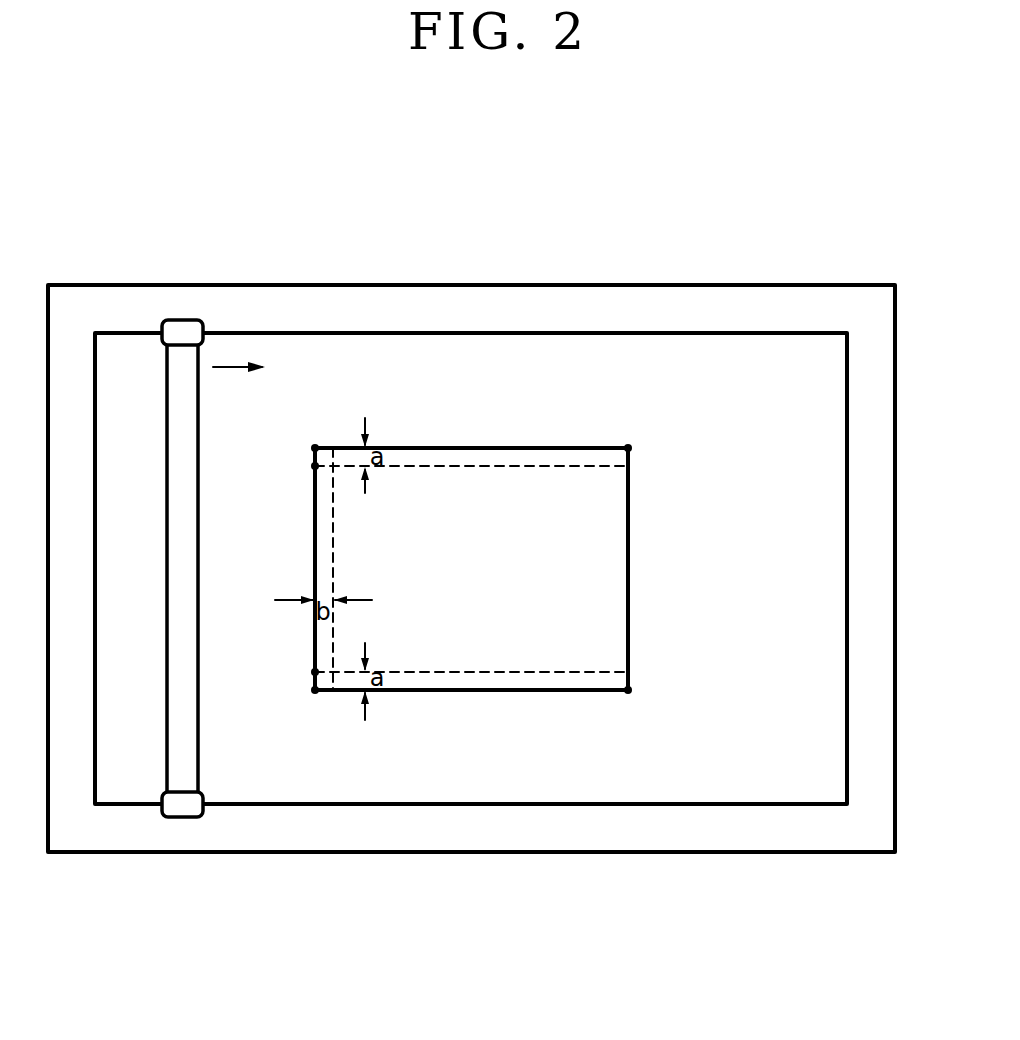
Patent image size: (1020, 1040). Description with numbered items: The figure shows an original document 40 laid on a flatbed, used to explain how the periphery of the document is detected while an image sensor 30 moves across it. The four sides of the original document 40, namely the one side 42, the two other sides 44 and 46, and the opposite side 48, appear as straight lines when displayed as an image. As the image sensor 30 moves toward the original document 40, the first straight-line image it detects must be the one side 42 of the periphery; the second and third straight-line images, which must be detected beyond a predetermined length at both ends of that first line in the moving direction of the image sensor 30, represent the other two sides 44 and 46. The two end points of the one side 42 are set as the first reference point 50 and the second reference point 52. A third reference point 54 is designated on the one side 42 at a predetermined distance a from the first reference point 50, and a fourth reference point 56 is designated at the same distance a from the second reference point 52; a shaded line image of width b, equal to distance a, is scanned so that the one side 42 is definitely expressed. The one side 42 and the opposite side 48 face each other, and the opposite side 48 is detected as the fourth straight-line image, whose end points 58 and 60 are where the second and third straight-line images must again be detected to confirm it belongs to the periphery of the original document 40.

The image sensor 30 is at (180, 634).
The original document 40 is at (440, 655).
The one side 42 is at (313, 573).
The other side 44 is at (518, 692).
The other side 46 is at (478, 446).
The opposite side 48 is at (630, 577).
The first reference point 50 is at (315, 694).
The second reference point 52 is at (315, 445).
The third reference point 54 is at (313, 672).
The fourth reference point 56 is at (313, 466).
The end point of the fourth straight-line image 58 is at (632, 448).
The end point of the fourth straight-line image 60 is at (632, 690).